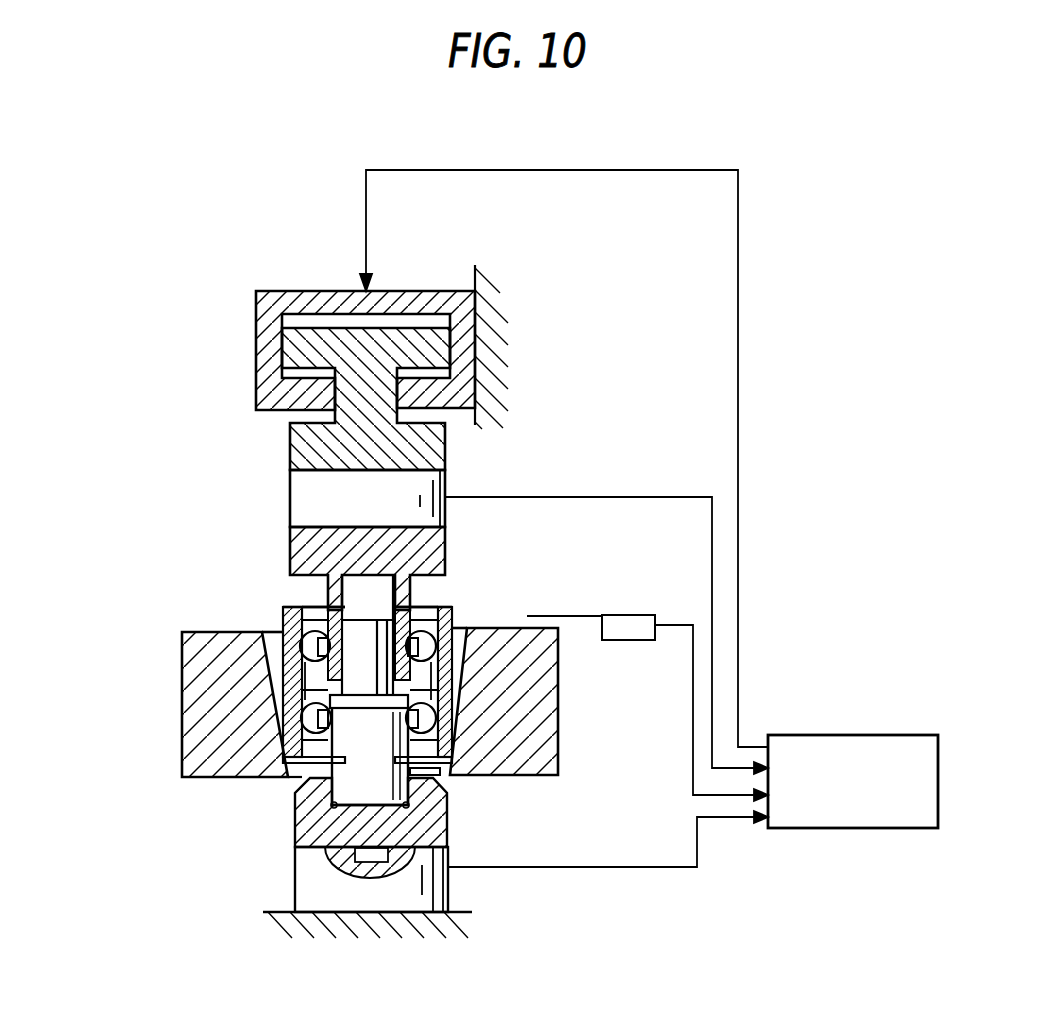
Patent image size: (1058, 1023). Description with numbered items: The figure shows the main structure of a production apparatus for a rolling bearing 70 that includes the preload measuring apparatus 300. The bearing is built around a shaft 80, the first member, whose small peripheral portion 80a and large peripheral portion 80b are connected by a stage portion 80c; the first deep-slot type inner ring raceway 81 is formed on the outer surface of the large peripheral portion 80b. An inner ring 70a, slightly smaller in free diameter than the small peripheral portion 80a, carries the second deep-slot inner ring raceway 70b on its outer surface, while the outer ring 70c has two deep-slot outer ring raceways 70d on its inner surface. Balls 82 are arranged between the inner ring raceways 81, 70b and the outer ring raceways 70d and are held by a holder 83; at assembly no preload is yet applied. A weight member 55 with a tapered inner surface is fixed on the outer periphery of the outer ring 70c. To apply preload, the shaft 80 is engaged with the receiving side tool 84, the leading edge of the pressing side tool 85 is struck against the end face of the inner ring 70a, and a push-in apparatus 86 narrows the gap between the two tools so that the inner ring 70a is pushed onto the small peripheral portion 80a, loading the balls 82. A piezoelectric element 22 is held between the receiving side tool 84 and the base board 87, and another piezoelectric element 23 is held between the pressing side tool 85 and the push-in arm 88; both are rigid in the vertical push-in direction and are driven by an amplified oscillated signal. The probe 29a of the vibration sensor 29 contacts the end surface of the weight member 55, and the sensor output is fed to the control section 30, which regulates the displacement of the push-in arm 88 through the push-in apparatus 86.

The preload measuring apparatus 300 is at (256, 274).
The push-in apparatus 86 is at (250, 342).
The push-in arm 88 is at (288, 440).
The piezoelectric element 23 is at (288, 482).
The pressing side tool 85 is at (290, 532).
The rolling bearing 70 is at (250, 649).
The inner ring 70a is at (322, 608).
The second deep-slot type inner ring raceway 70b is at (302, 672).
The outer ring 70c is at (305, 688).
The deep-slot type outer ring raceway 70d is at (290, 633).
The shaft 80 is at (311, 688).
The small peripheral portion 80a is at (362, 630).
The large peripheral portion 80b is at (330, 770).
The stage portion 80c is at (340, 700).
The first deep-slot type inner ring raceway 81 is at (285, 777).
The balls 82 is at (455, 628).
The holder 83 is at (448, 607).
The probe 29a is at (518, 620).
The vibration sensor 29 is at (632, 641).
The weight member 55 is at (558, 735).
The receiving side tool 84 is at (302, 834).
The piezoelectric element 22 is at (293, 888).
The base board 87 is at (467, 920).
The control section 30 is at (876, 829).